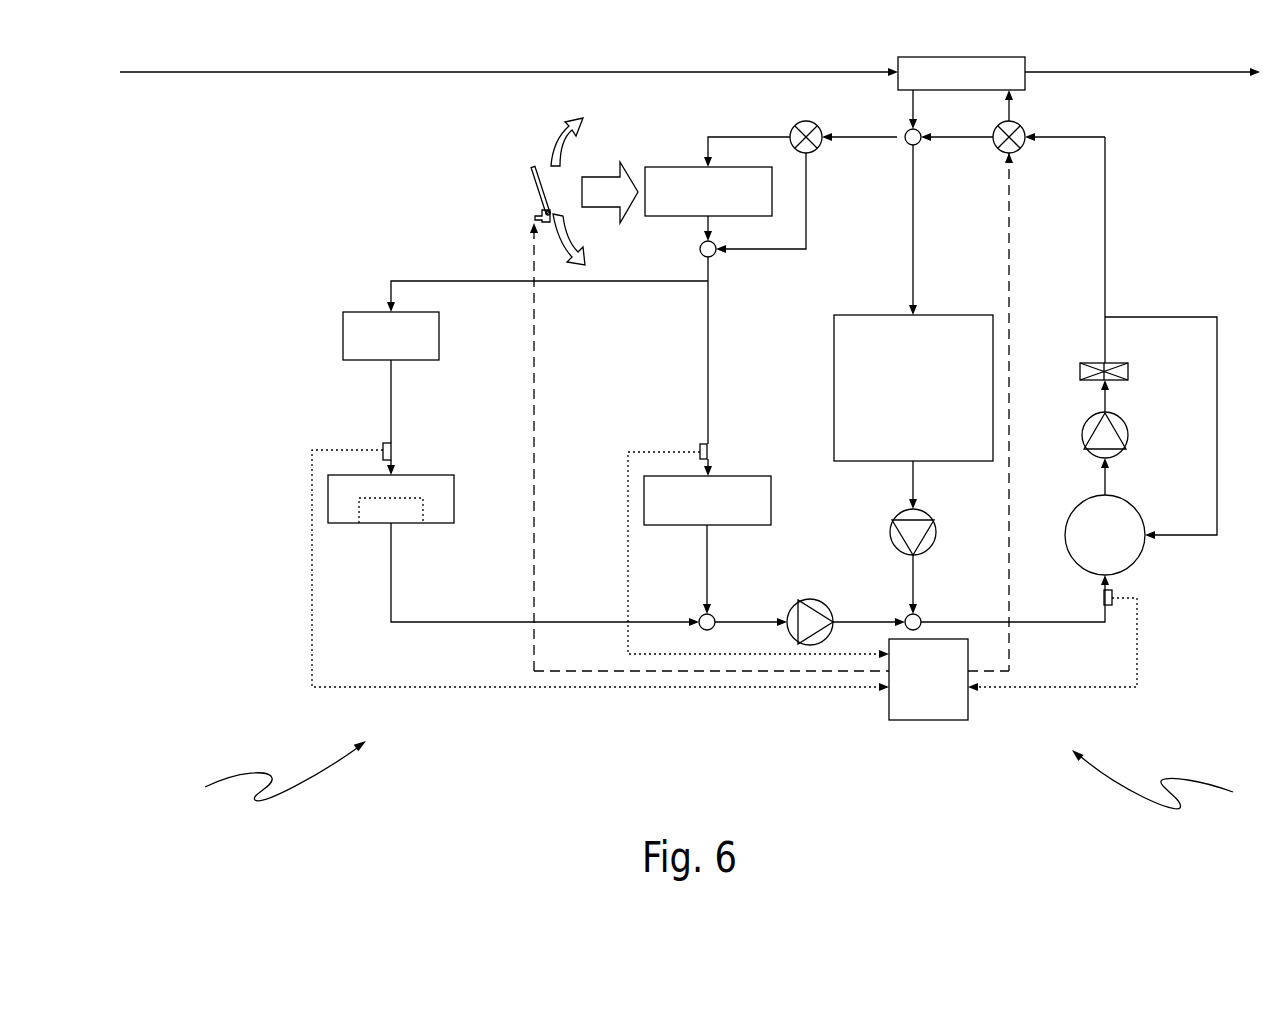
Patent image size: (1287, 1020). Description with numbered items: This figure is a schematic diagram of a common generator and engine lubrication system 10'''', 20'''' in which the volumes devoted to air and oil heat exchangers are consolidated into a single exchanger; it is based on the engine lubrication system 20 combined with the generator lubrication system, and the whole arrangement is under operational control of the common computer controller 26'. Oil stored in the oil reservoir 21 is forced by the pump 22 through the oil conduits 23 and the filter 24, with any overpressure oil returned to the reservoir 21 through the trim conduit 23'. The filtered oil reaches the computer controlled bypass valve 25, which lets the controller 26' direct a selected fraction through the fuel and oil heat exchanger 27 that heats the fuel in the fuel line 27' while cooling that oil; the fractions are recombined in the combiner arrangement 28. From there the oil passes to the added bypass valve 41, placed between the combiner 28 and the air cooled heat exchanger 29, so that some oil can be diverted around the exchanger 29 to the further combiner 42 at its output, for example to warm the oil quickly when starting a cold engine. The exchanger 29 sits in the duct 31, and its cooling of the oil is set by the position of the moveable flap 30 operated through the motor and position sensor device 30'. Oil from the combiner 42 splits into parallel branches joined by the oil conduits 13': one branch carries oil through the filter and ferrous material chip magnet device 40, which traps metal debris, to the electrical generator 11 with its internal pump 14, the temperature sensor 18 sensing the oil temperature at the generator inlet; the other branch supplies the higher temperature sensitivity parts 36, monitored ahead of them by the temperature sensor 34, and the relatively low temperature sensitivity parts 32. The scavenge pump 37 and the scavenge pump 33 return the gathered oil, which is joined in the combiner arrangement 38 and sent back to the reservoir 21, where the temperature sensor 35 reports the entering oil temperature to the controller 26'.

The common generator and engine lubrication system 10'''' is at (242, 771).
The common generator and engine lubrication system 20'''' is at (242, 771).
The lubrication system for a turbofan engine 20 is at (1169, 779).
The electrical generator 11 is at (425, 475).
The oil conduits 13' is at (801, 351).
The pump 14 is at (370, 525).
The temperature sensor 18 is at (383, 451).
The oil reservoir 21 is at (1140, 565).
The pump 22 is at (1124, 448).
The oil conduits 23 is at (750, 576).
The trim conduit 23' is at (801, 351).
The filter 24 is at (1128, 368).
The bypass valve 25 is at (1022, 128).
The common computer controller 26' is at (783, 679).
The fuel and oil heat exchanger 27 is at (925, 78).
The fuel line 27' is at (690, 59).
The combiner arrangement 28 is at (905, 133).
The air cooled heat exchanger 29 is at (662, 167).
The moveable flap 30 is at (565, 192).
The motor and associated position sensor device 30' is at (753, 412).
The duct 31 is at (575, 120).
The relatively low temperature sensitivity parts 32 is at (833, 412).
The scavenge pump 33 is at (935, 540).
The temperature sensor 34 is at (700, 450).
The temperature sensor 35 is at (1108, 612).
The higher temperature sensitivity parts 36 is at (750, 477).
The scavenge pump 37 is at (808, 600).
The combiner arrangement 38 is at (922, 618).
The filter and ferrous material chip magnet device 40 is at (440, 334).
The bypass valve 41 is at (820, 148).
The combiner 42 is at (716, 255).